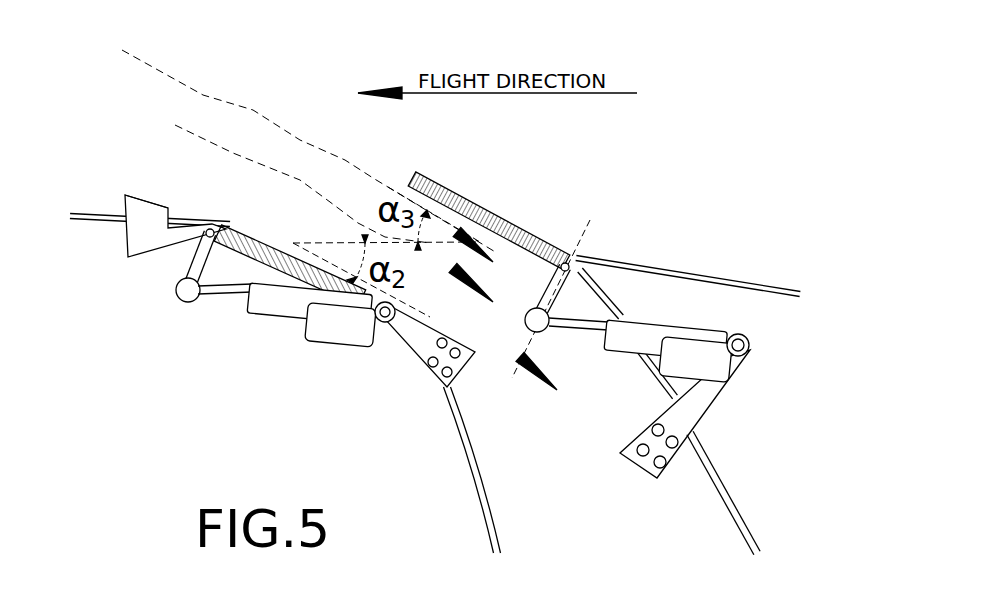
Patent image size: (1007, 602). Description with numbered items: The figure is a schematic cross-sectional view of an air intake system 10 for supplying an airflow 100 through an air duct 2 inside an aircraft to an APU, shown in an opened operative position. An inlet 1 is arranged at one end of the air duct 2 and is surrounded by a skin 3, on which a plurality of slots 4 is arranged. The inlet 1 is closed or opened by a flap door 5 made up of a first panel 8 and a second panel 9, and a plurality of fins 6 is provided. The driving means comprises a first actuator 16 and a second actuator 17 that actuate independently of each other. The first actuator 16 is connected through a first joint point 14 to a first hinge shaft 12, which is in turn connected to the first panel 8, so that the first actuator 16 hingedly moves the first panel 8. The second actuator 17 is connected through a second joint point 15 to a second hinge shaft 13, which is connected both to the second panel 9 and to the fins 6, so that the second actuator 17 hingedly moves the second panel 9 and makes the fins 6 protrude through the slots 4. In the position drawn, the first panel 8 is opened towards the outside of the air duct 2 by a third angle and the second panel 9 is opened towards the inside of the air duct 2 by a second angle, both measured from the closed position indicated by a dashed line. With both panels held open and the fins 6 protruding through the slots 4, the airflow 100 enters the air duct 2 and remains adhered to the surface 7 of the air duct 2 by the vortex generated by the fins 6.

The airflow 100 is at (333, 157).
The inlet 1 is at (362, 202).
The air duct 2 is at (510, 497).
The skin 3 is at (85, 212).
The slots 4 is at (114, 172).
The flap door 5 is at (270, 212).
The fins 6 is at (126, 222).
The surface 7 is at (487, 443).
The first panel 8 is at (545, 244).
The second panel 9 is at (237, 223).
The air intake system 10 is at (667, 120).
The first hinge shaft 12 is at (570, 293).
The second hinge shaft 13 is at (193, 262).
The first joint point 14 is at (545, 335).
The second joint point 15 is at (172, 293).
The first actuator 16 is at (768, 318).
The second actuator 17 is at (290, 366).